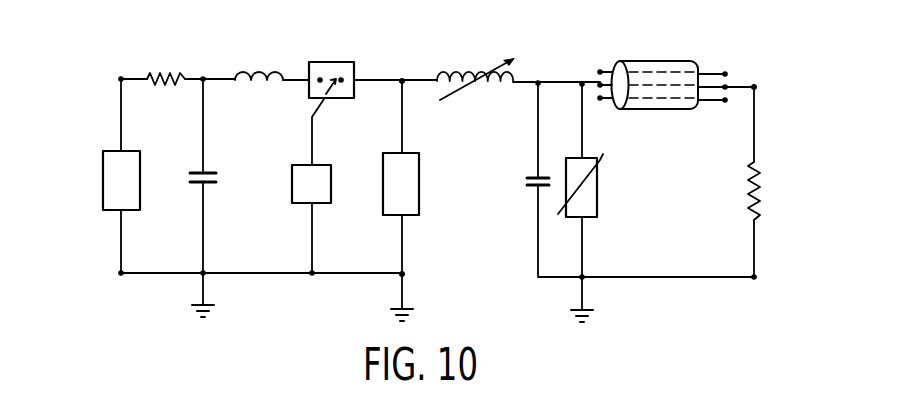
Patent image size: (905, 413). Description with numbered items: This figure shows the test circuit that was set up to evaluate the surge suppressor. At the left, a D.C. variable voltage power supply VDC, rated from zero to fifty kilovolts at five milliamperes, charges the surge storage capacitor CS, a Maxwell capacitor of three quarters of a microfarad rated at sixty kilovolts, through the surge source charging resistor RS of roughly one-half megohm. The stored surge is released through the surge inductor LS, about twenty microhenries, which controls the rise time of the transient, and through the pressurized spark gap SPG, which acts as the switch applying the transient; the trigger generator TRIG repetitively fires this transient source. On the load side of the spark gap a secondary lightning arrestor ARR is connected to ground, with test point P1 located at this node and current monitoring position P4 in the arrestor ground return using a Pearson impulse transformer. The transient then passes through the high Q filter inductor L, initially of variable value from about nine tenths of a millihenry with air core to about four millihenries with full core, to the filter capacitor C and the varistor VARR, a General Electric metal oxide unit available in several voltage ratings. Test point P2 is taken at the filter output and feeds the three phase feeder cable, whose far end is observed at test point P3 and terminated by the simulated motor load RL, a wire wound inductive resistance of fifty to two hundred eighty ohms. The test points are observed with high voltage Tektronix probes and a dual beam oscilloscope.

The surge source charging resistor RS is at (166, 60).
The surge inductor LS is at (259, 57).
The pressurized spark gap SPG is at (334, 101).
The test point P1 is at (402, 75).
The high Q filter inductor L is at (476, 67).
The test point P2 is at (600, 80).
The test point P3 is at (755, 86).
The D.C. variable voltage power supply VDC is at (100, 180).
The surge storage capacitor CS is at (219, 182).
The trigger generator TRIG is at (291, 205).
The secondary lightning arrestor ARR is at (422, 199).
The current monitoring position P4 is at (402, 263).
The filter capacitor C is at (524, 187).
The varistor VARR is at (609, 185).
The simulated motor load RL is at (767, 191).